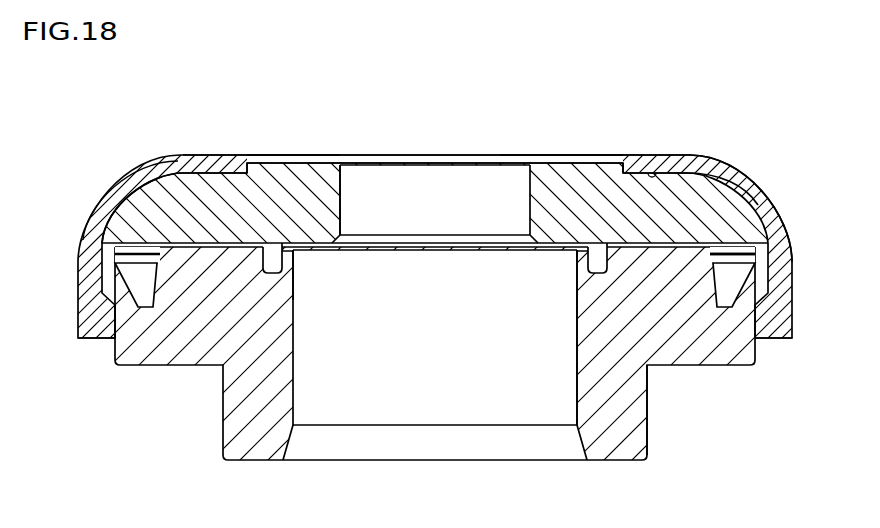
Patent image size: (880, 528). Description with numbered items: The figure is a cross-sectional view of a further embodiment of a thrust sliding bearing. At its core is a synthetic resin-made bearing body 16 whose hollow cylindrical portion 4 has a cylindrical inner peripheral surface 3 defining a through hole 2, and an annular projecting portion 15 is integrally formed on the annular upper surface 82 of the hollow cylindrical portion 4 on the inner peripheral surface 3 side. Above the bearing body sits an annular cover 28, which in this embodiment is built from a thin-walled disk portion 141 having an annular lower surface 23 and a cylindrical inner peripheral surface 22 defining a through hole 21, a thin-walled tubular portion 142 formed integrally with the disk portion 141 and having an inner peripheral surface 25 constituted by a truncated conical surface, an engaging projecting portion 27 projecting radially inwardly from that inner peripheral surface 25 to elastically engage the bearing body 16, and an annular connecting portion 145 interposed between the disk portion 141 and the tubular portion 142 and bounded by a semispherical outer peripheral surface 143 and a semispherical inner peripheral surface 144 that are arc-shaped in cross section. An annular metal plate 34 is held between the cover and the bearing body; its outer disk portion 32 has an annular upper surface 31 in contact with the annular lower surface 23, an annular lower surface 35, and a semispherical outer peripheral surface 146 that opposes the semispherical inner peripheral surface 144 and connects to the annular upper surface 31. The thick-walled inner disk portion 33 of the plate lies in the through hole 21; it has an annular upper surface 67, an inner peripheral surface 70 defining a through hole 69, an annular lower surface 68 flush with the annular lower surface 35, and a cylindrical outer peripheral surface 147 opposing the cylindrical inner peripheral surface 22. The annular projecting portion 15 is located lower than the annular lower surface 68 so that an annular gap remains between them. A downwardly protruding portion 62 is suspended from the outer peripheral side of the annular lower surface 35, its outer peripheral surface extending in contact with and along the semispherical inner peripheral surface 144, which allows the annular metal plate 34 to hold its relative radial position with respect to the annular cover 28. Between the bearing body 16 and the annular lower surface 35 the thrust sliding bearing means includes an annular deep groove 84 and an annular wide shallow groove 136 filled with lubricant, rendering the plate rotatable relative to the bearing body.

The through hole 2 is at (428, 408).
The inner peripheral surface 3 is at (570, 388).
The hollow cylindrical portion 4 is at (245, 407).
The annular projecting portion 15 is at (580, 271).
The bearing body 16 is at (647, 405).
The through hole 21 is at (303, 160).
The inner peripheral surface 22 is at (248, 158).
The annular lower surface 23 is at (658, 177).
The inner peripheral surface 25 is at (763, 273).
The engaging projecting portion 27 is at (100, 325).
The annular cover 28 is at (751, 178).
The annular upper surface 31 is at (640, 172).
The outer disk portion 32 is at (736, 222).
The inner disk portion 33 is at (327, 181).
The annular metal plate 34 is at (427, 158).
The annular lower surface 35 is at (683, 256).
The downwardly protruding portion 62 is at (103, 290).
The annular upper surface 67 is at (542, 160).
The annular lower surface 68 is at (277, 260).
The through hole 69 is at (460, 180).
The inner peripheral surface 70 is at (342, 196).
The annular upper surface 82 is at (183, 160).
The annular deep groove 84 is at (283, 285).
The annular wide shallow groove 136 is at (576, 299).
The disk portion 141 is at (223, 168).
The tubular portion 142 is at (780, 327).
The semispherical outer peripheral surface 143 is at (95, 207).
The semispherical inner peripheral surface 144 is at (123, 226).
The annular connecting portion 145 is at (770, 218).
The semispherical outer peripheral surface 146 is at (121, 222).
The cylindrical outer peripheral surface 147 is at (632, 160).